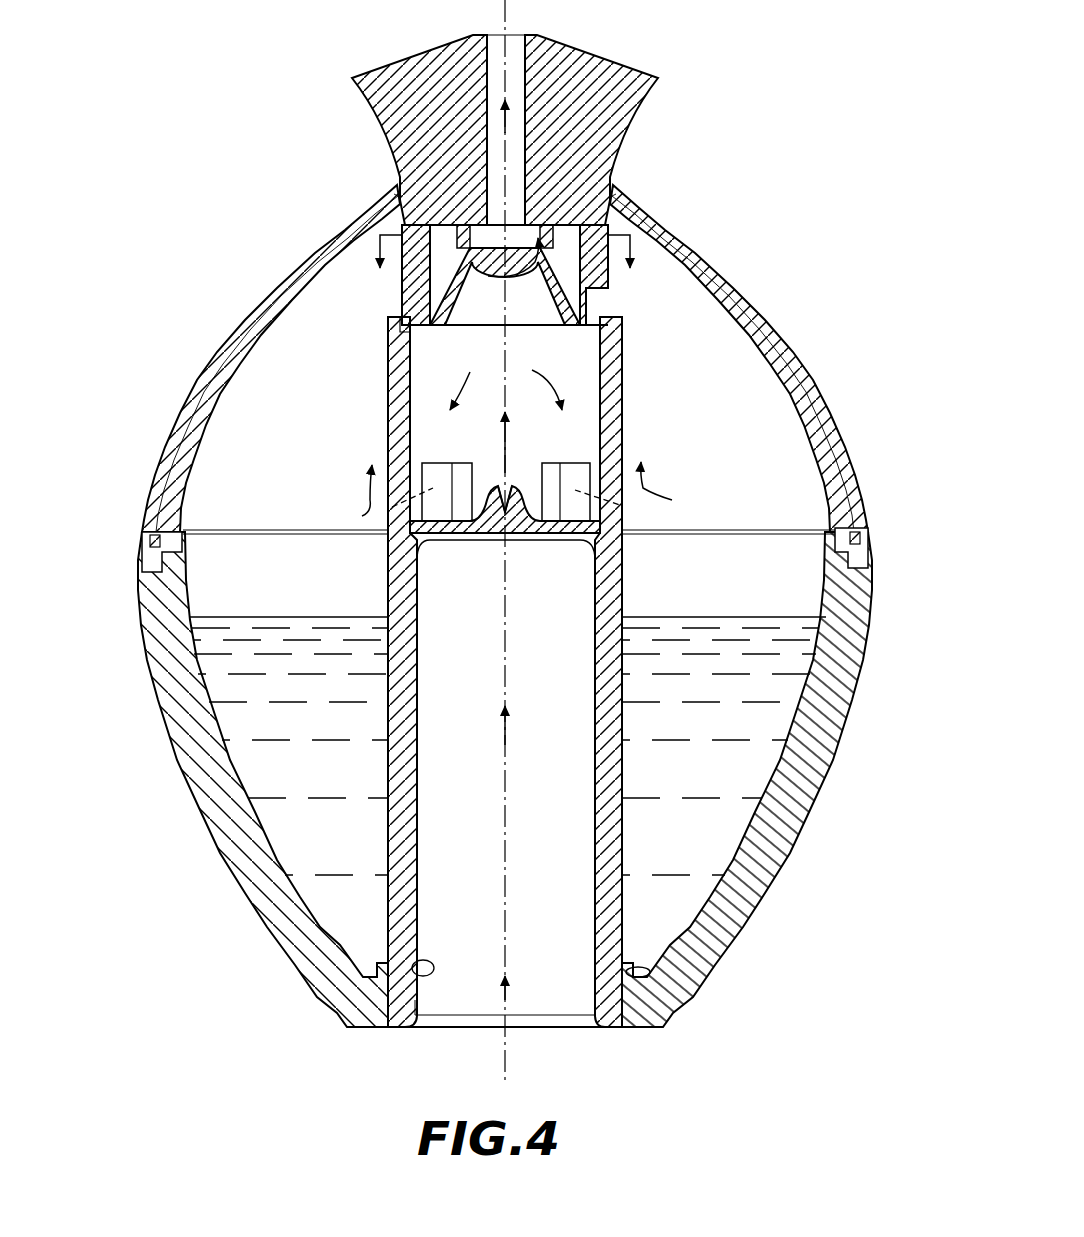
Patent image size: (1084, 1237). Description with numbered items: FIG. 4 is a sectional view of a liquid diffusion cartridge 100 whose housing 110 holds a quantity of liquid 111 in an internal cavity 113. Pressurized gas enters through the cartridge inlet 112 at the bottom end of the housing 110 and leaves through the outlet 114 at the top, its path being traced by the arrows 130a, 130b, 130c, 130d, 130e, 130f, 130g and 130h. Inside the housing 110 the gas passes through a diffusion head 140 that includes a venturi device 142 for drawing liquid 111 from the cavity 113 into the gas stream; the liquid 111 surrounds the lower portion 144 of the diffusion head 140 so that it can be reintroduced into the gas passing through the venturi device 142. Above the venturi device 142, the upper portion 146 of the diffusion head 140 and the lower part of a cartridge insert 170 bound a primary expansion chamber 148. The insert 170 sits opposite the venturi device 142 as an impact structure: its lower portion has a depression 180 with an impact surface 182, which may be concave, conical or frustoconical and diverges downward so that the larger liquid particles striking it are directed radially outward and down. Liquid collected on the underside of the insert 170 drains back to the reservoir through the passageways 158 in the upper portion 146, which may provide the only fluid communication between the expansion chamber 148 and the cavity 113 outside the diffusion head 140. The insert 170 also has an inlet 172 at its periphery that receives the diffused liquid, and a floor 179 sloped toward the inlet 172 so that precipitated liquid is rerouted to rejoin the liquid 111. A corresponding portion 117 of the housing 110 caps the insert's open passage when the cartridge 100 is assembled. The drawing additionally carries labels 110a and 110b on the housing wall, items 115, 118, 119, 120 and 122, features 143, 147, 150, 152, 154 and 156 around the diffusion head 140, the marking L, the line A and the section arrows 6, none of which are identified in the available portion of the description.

The cartridge 100 is at (732, 98).
The housing 110 is at (185, 300).
The upper body portion 110a is at (183, 418).
The lower body portion 110b is at (192, 750).
The liquid 111 is at (760, 660).
The cartridge inlet 112 is at (449, 1048).
The internal cavity 113 is at (785, 460).
The outlet 114 is at (493, 34).
The neck 115 is at (512, 76).
The corresponding portion of the housing 117 is at (582, 226).
The bottom opening 118 is at (613, 1030).
The interior cavity 119 is at (358, 818).
The seal ring 120 is at (868, 552).
The gasket 122 is at (850, 530).
The gas flow arrow 130a is at (507, 1003).
The gas flow arrow 130b is at (500, 748).
The gas flow arrow 130c is at (508, 444).
The gas flow arrow 130d is at (470, 372).
The gas flow arrow 130e is at (521, 494).
The gas flow arrow 130f is at (613, 293).
The gas flow arrow 130g is at (512, 280).
The gas flow arrow 130h is at (510, 134).
The diffusion head 140 is at (372, 569).
The venturi device 142 is at (536, 503).
The annular gap 143 is at (620, 968).
The lower portion of the diffusion head 144 is at (572, 545).
The upper portion of the diffusion head 146 is at (322, 320).
The orifice 147 is at (494, 548).
The primary expansion chamber 148 is at (432, 422).
The cap 150 is at (403, 338).
The inlet opening 152 is at (433, 992).
The recess 154 is at (433, 968).
The valve housing sidewall 156 is at (400, 362).
The passageways 158 is at (428, 472).
The cartridge insert 170 is at (366, 300).
The inlet 172 is at (655, 340).
The floor 179 is at (418, 232).
The depression 180 is at (514, 322).
The impact surface 182 is at (462, 297).
The liquid L is at (785, 618).
The central axis A is at (505, 1080).
The section line 6- 6 is at (505, 268).